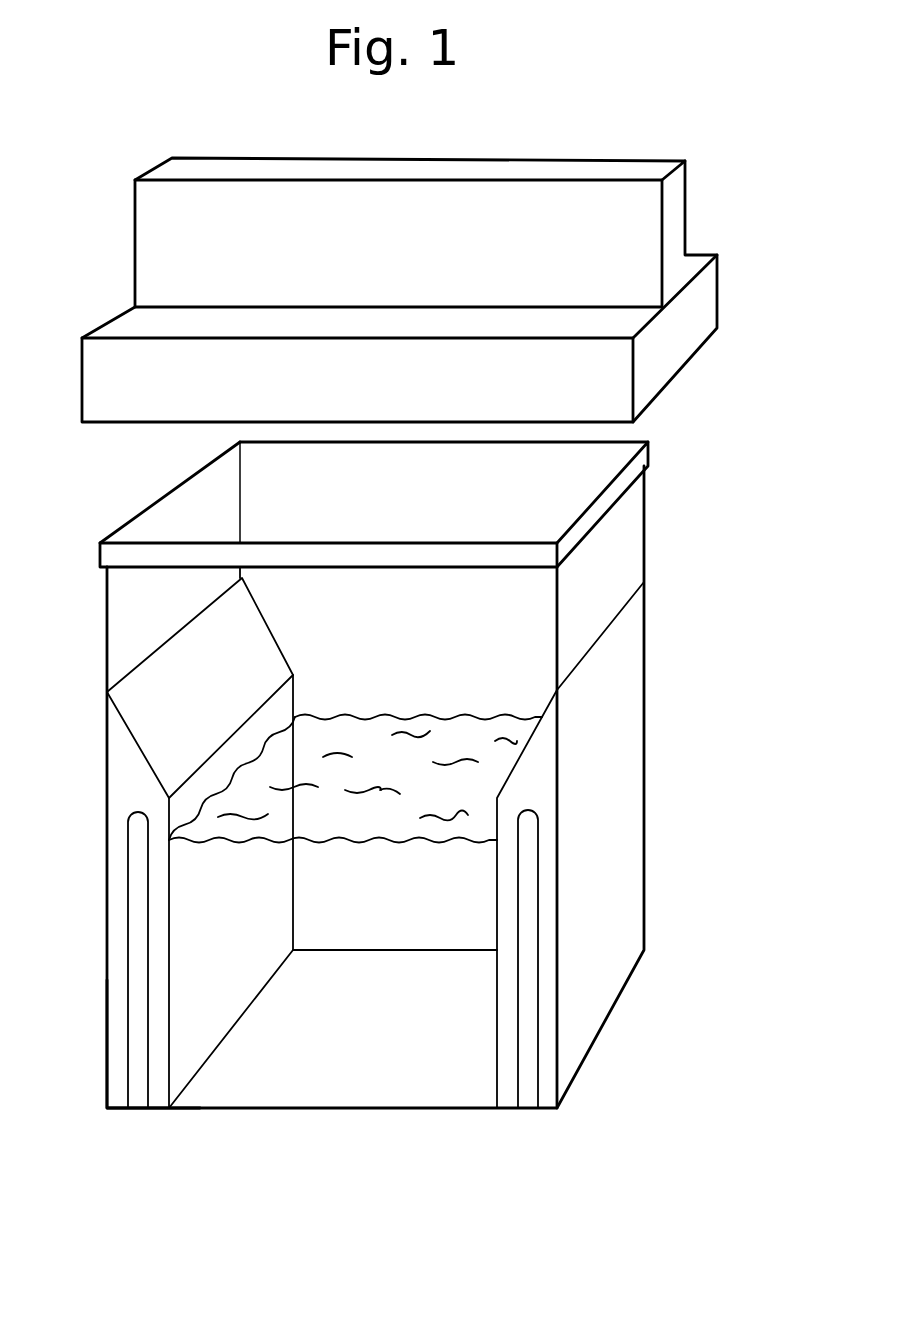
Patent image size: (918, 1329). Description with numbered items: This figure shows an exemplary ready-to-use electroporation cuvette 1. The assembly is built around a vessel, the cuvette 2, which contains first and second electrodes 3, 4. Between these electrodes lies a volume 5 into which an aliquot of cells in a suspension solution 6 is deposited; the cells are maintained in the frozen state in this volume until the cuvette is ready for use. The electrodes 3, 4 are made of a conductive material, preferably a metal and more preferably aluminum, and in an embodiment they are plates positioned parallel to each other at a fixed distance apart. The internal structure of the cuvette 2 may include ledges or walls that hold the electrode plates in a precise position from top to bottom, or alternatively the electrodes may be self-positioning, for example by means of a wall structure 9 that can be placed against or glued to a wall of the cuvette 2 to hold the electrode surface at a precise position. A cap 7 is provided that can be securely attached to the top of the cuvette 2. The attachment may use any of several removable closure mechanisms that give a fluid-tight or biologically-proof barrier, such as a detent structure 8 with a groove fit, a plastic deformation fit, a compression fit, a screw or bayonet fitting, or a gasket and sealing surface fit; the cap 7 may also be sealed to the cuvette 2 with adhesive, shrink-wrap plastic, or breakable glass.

The ready-to-use electroporation cuvette 1 is at (713, 628).
The cuvette 2 is at (107, 638).
The first electrode 3 is at (158, 875).
The second electrode 4 is at (528, 745).
The volume 5 is at (372, 621).
The suspension solution 6 is at (375, 724).
The cap 7 is at (687, 207).
The detent structure 8 is at (652, 447).
The wall structure 9 is at (107, 1030).